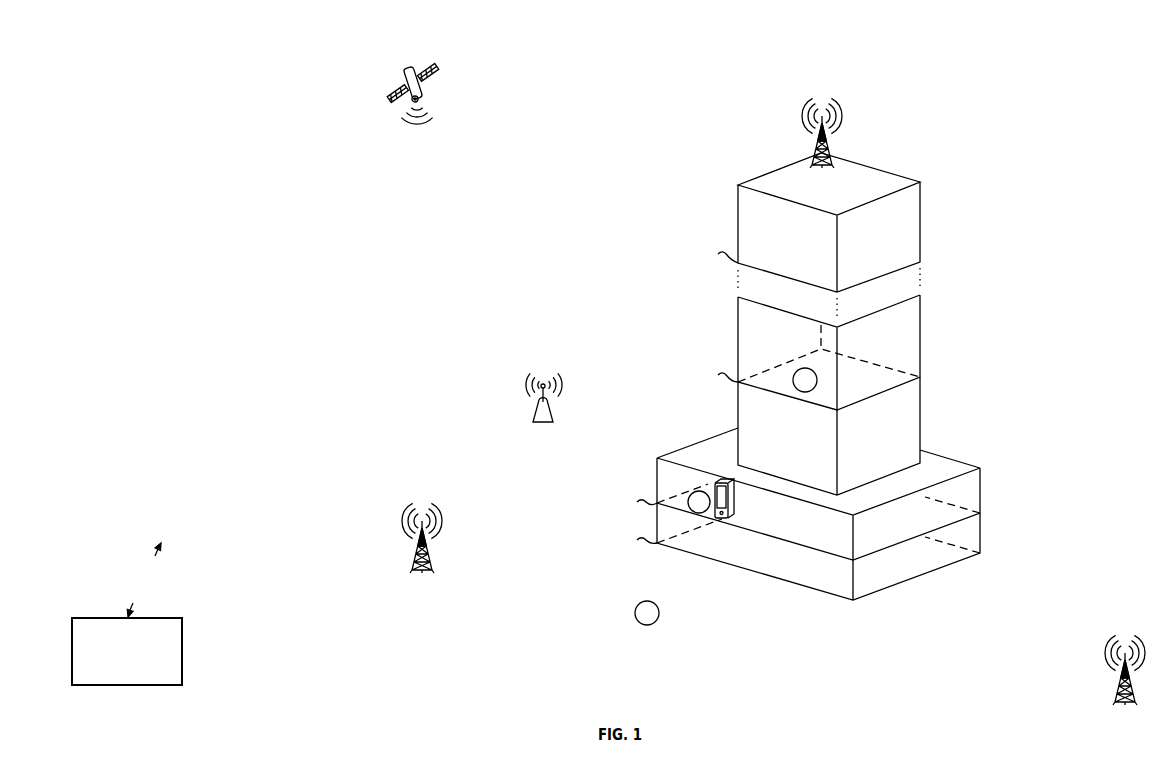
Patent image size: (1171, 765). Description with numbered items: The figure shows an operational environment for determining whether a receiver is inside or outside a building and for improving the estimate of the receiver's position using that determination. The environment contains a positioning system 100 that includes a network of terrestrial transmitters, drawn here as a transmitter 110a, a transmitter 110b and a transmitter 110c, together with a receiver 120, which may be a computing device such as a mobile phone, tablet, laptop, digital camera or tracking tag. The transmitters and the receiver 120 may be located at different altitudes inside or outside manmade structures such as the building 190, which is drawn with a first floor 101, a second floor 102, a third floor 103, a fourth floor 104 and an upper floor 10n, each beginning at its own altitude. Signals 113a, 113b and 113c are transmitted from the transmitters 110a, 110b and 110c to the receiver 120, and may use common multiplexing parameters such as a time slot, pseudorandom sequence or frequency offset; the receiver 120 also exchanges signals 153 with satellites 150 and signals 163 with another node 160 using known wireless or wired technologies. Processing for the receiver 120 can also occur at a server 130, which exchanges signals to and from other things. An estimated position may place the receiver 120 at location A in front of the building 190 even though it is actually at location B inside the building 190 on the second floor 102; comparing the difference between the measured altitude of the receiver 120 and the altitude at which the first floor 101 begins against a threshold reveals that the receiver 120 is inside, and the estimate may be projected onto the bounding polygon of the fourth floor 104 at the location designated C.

The positioning system 100 is at (127, 78).
The satellites 150 is at (430, 55).
The signals 153 is at (431, 118).
The signals 163 is at (523, 387).
The node 160 is at (535, 410).
The signals 113a is at (403, 515).
The transmitter 110a is at (414, 557).
The signals 113b is at (1108, 645).
The transmitter 110b is at (1116, 684).
The signals 113c is at (812, 109).
The transmitter 110c is at (812, 151).
The building 190 is at (853, 600).
The floor 10n is at (920, 232).
The floor 104 is at (920, 358).
The floor 103 is at (920, 418).
The second floor 102 is at (980, 483).
The floor 101 is at (980, 520).
The receiver 120 is at (734, 515).
The server 130 is at (138, 671).